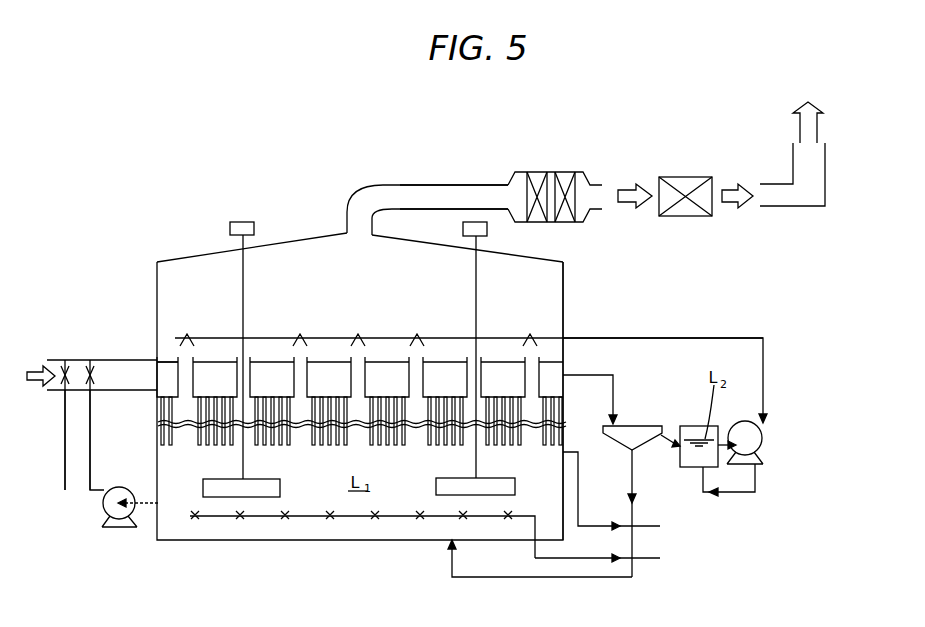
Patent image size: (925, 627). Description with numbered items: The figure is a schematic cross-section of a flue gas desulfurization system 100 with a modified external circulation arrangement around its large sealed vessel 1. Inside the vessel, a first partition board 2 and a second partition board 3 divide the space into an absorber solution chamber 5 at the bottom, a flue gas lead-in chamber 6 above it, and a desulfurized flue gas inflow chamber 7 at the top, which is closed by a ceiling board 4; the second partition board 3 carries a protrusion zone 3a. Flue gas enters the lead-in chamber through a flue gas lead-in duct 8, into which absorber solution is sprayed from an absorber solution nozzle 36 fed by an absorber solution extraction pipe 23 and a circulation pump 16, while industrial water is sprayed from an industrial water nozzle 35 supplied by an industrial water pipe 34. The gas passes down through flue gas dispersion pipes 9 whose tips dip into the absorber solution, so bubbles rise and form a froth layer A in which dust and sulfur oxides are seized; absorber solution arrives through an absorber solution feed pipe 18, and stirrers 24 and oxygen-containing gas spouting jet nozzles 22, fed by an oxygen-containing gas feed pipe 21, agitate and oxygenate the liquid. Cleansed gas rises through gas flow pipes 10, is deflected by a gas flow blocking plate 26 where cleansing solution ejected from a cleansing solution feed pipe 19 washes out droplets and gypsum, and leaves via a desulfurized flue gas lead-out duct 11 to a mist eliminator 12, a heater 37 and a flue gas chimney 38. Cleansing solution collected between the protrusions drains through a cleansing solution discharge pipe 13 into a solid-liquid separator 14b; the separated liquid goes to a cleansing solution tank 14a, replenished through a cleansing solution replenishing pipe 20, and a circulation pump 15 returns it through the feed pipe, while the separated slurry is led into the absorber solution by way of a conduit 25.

The flue gas desulfurization system 100 is at (163, 251).
The sealed vessel 1 is at (155, 263).
The first partition board 2 is at (158, 418).
The second partition board 3 is at (164, 356).
The protrusion zone 3a is at (556, 357).
The ceiling board 4 is at (297, 243).
The absorber solution chamber 5 is at (529, 447).
The flue gas lead-in chamber 6 is at (158, 384).
The desulfurized flue gas inflow chamber 7 is at (552, 282).
The flue gas lead-in duct 8 is at (120, 374).
The flue gas dispersion pipes 9 is at (290, 442).
The gas flow pipes 10 is at (372, 360).
The desulfurized flue gas lead-out duct 11 is at (455, 184).
The mist eliminator 12 is at (550, 171).
The cleansing solution discharge pipe 13 is at (580, 373).
The cleansing solution tank 14a is at (695, 424).
The solid-liquid separator 14b is at (648, 424).
The circulation pump 15 is at (766, 456).
The circulation pump 16 is at (128, 528).
The absorber solution feed pipe 18 is at (660, 526).
The cleansing solution feed pipe 19 is at (766, 345).
The cleansing solution replenishing pipe 20 is at (755, 492).
The oxygen-containing gas feed pipe 21 is at (660, 558).
The oxygen-containing gas spouting jet nozzles 22 is at (337, 518).
The absorber solution extraction pipe 23 is at (99, 514).
The stirrers 24 is at (265, 497).
The conduit 25 is at (634, 577).
The gas flow blocking plate 26 is at (302, 336).
The industrial water pipe 34 is at (65, 490).
The industrial water nozzle 35 is at (73, 362).
The absorber solution nozzle 36 is at (98, 362).
The heater 37 is at (691, 176).
The flue gas chimney 38 is at (800, 208).
The froth layer A is at (160, 426).